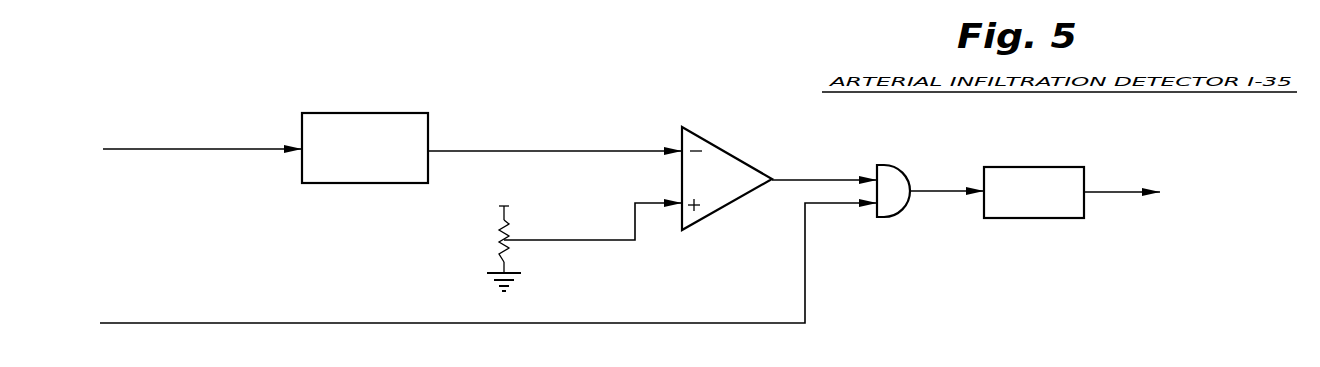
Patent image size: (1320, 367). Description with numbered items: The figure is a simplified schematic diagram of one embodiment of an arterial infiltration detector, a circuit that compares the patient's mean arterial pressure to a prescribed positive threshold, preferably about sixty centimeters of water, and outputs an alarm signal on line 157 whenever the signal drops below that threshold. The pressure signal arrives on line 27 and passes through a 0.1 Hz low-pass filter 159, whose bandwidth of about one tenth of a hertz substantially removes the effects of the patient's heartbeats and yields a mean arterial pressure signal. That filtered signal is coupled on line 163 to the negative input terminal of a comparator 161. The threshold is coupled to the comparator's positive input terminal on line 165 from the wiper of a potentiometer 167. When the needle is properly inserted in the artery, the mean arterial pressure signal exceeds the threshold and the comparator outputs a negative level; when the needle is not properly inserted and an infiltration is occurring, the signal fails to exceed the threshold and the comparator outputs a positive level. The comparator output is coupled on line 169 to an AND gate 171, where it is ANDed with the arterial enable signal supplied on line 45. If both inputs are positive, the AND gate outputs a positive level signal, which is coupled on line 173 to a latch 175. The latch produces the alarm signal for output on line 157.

The line 27 is at (236, 149).
The 0.1 Hz low-pass filter 159 is at (365, 113).
The line 163 is at (634, 147).
The comparator 161 is at (727, 153).
The potentiometer 167 is at (492, 237).
The line 165 is at (581, 240).
The line 169 is at (815, 180).
The AND gate 171 is at (895, 217).
The line 173 is at (937, 191).
The latch 175 is at (1034, 218).
The line 157 is at (1104, 192).
The line 45 is at (360, 323).